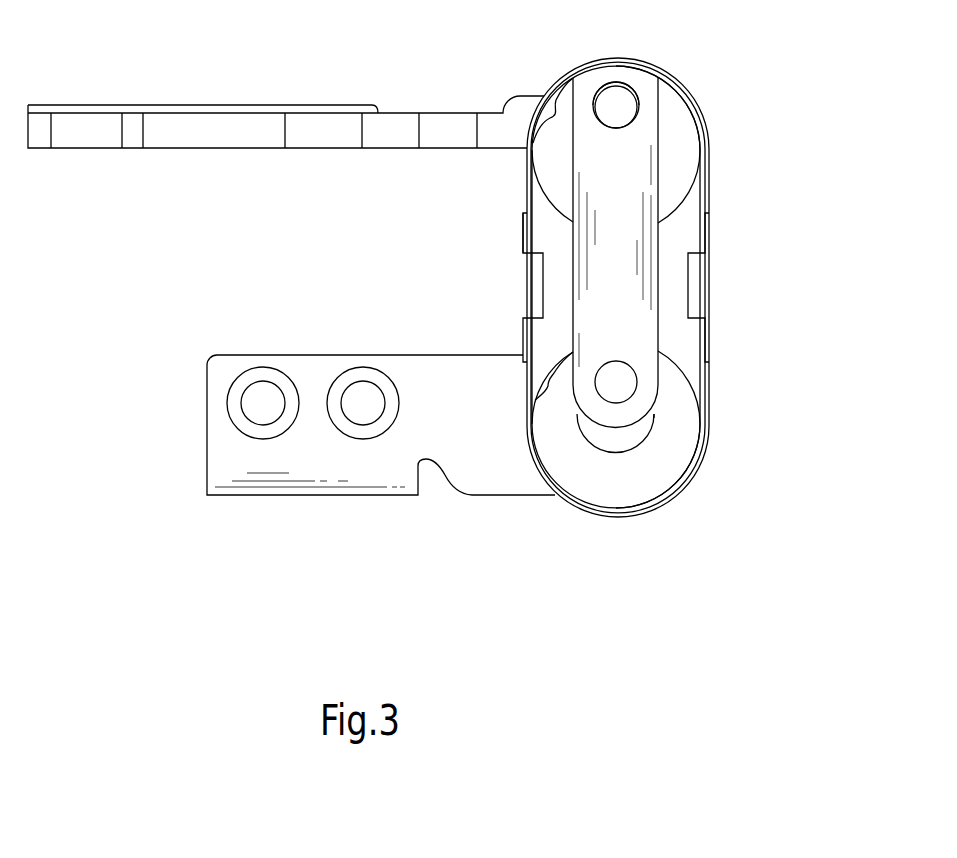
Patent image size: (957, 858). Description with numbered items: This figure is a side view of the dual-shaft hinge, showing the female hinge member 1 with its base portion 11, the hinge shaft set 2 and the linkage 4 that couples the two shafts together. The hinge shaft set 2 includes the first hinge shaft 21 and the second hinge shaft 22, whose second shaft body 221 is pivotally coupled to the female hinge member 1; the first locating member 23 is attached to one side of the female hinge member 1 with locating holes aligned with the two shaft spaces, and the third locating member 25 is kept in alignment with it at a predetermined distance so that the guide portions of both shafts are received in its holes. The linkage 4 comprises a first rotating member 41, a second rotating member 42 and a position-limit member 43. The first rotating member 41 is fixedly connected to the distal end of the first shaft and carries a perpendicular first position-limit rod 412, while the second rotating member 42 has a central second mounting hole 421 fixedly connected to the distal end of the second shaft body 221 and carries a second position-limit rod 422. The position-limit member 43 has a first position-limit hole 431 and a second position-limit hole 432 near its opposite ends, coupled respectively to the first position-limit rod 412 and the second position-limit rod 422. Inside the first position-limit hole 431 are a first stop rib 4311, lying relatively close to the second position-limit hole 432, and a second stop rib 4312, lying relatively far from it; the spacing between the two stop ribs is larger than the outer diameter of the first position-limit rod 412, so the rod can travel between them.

The female hinge member 1 is at (523, 253).
The base portion 11 is at (523, 231).
The hinge shaft set 2 is at (172, 272).
The first hinge shaft 21 is at (338, 105).
The second hinge shaft 22 is at (207, 428).
The second shaft body 221 is at (623, 448).
The first locating member 23 is at (555, 295).
The third locating member 25 is at (528, 287).
The linkage 4 is at (661, 241).
The first rotating member 41 is at (683, 130).
The first position-limit rod 412 is at (625, 102).
The second rotating member 42 is at (688, 408).
The second mounting hole 421 is at (645, 453).
The second position-limit rod 422 is at (653, 418).
The position-limit member 43 is at (650, 288).
The first position-limit hole 431 is at (593, 100).
The first stop rib 4311 is at (614, 81).
The second stop rib 4312 is at (627, 128).
The second position-limit hole 432 is at (628, 363).